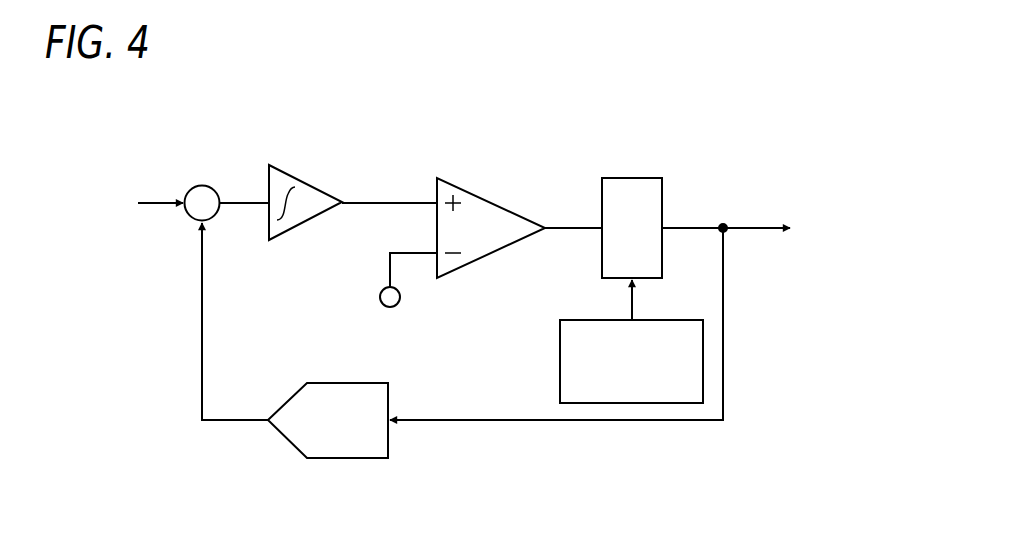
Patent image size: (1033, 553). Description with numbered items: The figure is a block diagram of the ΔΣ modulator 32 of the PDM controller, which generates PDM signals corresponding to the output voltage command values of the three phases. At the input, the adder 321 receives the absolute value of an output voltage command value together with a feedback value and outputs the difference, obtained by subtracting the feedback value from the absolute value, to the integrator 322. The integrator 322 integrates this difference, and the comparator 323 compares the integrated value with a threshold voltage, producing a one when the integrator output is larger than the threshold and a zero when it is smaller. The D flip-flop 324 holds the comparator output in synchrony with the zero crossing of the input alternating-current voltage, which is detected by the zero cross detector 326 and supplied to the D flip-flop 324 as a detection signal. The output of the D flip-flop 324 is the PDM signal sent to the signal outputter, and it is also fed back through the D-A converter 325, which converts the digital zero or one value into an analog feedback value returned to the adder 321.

The ΔΣ modulator 32 is at (384, 136).
The adder 321 is at (203, 185).
The integrator 322 is at (302, 182).
The comparator 323 is at (488, 203).
The D flip-flop 324 is at (640, 178).
The D-A converter 325 is at (348, 459).
The zero cross detector 326 is at (565, 358).